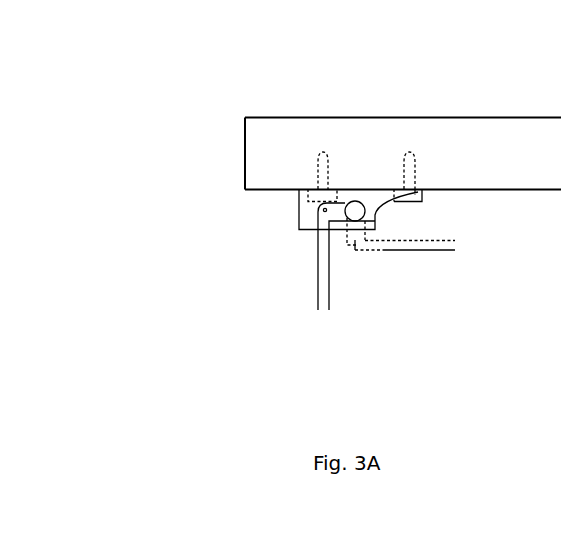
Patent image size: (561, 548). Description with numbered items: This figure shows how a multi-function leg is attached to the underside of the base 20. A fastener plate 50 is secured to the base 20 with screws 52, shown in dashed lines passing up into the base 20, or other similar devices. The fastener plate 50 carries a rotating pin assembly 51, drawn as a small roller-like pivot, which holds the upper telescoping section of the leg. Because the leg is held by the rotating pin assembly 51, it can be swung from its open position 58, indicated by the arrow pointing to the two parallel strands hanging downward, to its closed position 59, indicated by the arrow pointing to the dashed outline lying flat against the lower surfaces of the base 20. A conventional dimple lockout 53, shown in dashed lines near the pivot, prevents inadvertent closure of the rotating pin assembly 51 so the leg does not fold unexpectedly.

The base 20 is at (206, 150).
The fastener plate 50 is at (307, 213).
The rotating pin assembly 51 is at (365, 212).
The screws 52 is at (333, 157).
The dimple lockout 53 is at (355, 250).
The open position 58 is at (296, 315).
The closed position 59 is at (474, 269).